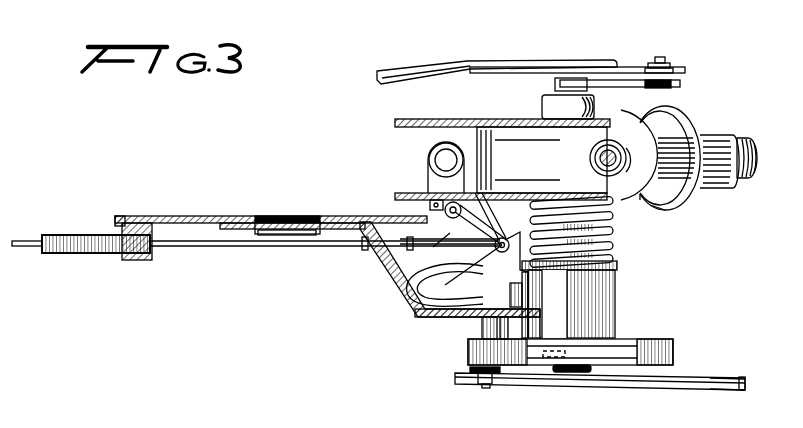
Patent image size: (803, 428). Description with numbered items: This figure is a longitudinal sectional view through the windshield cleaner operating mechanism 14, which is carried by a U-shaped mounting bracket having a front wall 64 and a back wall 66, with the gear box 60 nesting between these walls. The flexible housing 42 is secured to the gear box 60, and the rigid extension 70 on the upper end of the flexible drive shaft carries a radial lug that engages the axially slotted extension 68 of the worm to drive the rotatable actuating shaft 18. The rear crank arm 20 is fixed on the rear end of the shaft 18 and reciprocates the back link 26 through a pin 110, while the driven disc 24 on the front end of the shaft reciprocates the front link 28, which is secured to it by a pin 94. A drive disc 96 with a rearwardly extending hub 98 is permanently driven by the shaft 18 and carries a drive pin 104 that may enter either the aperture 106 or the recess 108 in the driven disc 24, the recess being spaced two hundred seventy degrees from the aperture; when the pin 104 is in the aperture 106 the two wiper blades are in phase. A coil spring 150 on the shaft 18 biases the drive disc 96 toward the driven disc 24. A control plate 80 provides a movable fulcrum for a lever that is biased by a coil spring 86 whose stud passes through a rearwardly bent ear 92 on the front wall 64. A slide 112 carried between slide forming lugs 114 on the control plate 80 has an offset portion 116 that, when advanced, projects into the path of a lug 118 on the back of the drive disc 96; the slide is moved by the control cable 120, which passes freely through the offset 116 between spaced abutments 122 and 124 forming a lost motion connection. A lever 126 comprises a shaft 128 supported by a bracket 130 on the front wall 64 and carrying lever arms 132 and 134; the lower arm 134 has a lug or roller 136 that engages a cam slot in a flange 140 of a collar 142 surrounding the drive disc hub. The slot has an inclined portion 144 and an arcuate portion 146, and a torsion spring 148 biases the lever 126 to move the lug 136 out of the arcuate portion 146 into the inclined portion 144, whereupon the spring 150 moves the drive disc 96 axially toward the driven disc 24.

The operating mechanism 14 is at (679, 106).
The actuating shaft 18 is at (548, 90).
The rear crank arm 20 is at (618, 85).
The driven disc 24 is at (673, 360).
The back link 26 is at (437, 67).
The front link 28 is at (718, 390).
The flexible housing 42 is at (737, 138).
The gear box 60 is at (638, 203).
The front wall 64 is at (395, 197).
The back wall 66 is at (395, 123).
The axially slotted extension 68 is at (630, 172).
The rigid extension 70 is at (590, 153).
The control plate 80 is at (182, 217).
The coil spring 86 is at (427, 147).
The rearwardly bent ear 92 is at (428, 175).
The pin 94 is at (488, 388).
The drive disc 96 is at (487, 323).
The hub 98 is at (615, 268).
The drive pin 104 is at (633, 333).
The aperture 106 is at (673, 348).
The recess 108 is at (543, 352).
The pin 110 is at (657, 60).
The slide 112 is at (245, 215).
The slide forming lugs 114 is at (258, 247).
The offset portion 116 is at (417, 300).
The lug 118 is at (483, 328).
The control cable 120 is at (180, 247).
The abutment 122 is at (365, 243).
The abutment 124 is at (410, 240).
The lever 126 is at (433, 247).
The shaft 128 is at (477, 182).
The bracket 130 is at (430, 207).
The lever arm 132 is at (487, 190).
The lower lever arm 134 is at (470, 230).
The lug or roller 136 is at (528, 280).
The flange 140 is at (468, 265).
The collar 142 is at (618, 303).
The inclined portion 144 is at (462, 316).
The arcuate portion 146 is at (407, 290).
The torsion spring 148 is at (448, 232).
The coil spring 150 is at (613, 240).